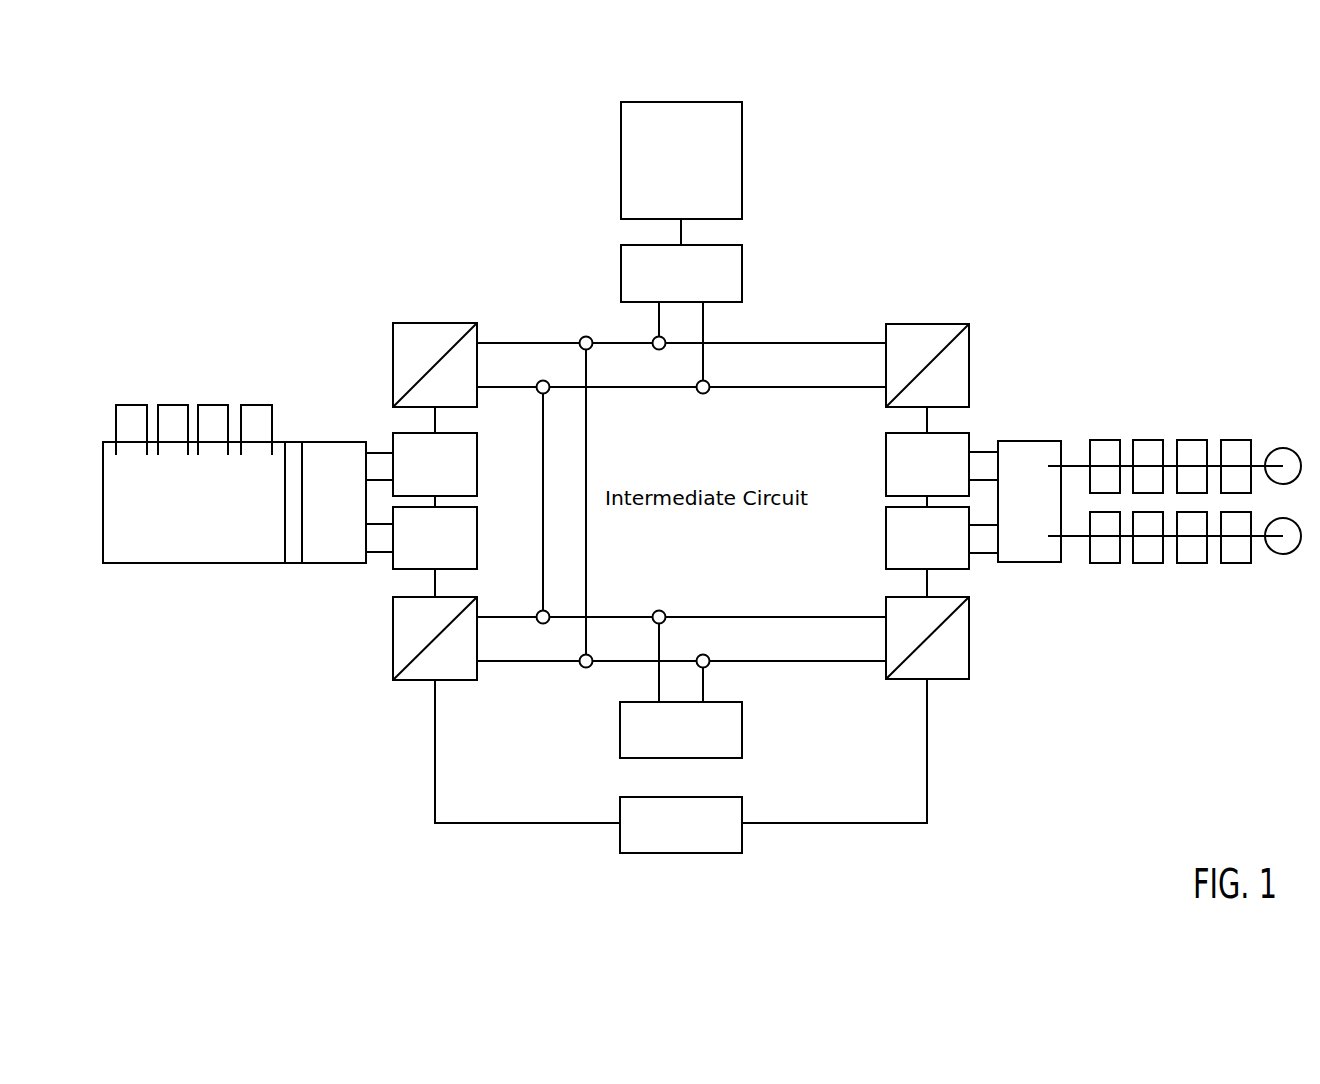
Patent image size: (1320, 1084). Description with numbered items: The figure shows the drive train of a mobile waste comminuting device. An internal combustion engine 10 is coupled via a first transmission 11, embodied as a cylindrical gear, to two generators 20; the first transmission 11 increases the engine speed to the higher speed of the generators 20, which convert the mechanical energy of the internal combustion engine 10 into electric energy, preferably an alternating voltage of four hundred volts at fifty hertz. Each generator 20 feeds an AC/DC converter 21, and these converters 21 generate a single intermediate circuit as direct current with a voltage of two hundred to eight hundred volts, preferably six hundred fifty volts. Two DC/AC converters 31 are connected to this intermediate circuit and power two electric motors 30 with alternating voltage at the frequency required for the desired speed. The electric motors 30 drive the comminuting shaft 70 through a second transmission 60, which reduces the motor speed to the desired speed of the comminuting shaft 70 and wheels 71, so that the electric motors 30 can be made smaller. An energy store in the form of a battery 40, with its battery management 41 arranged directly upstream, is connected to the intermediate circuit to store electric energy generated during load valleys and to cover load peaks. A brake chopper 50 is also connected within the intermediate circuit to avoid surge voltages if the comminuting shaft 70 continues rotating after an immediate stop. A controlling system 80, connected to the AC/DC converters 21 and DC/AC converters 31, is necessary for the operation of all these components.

The internal combustion engine 10 is at (256, 555).
The first transmission 11 is at (339, 555).
The generator 20 is at (500, 517).
The AC/DC converter 21 is at (393, 667).
The electric motor 30 is at (886, 518).
The DC/AC converter 31 is at (993, 668).
The energy store 40 is at (742, 113).
The battery management 41 is at (742, 258).
The brake chopper 50 is at (742, 745).
The second transmission 60 is at (1029, 555).
The comminuting shaft 70 is at (1149, 428).
The wheels 71 is at (1151, 575).
The controlling system 80 is at (742, 838).